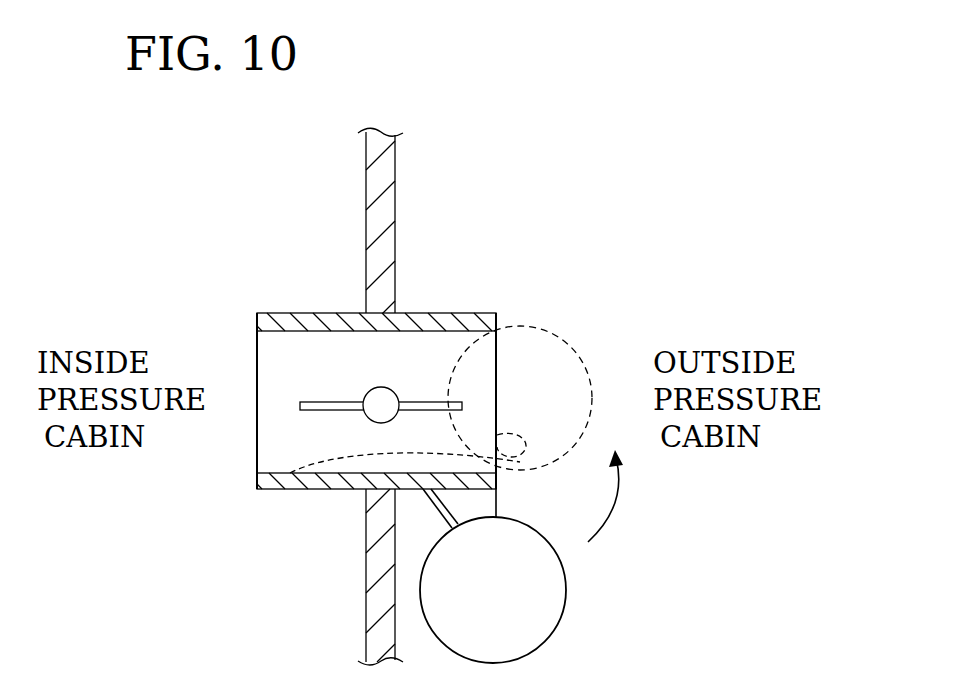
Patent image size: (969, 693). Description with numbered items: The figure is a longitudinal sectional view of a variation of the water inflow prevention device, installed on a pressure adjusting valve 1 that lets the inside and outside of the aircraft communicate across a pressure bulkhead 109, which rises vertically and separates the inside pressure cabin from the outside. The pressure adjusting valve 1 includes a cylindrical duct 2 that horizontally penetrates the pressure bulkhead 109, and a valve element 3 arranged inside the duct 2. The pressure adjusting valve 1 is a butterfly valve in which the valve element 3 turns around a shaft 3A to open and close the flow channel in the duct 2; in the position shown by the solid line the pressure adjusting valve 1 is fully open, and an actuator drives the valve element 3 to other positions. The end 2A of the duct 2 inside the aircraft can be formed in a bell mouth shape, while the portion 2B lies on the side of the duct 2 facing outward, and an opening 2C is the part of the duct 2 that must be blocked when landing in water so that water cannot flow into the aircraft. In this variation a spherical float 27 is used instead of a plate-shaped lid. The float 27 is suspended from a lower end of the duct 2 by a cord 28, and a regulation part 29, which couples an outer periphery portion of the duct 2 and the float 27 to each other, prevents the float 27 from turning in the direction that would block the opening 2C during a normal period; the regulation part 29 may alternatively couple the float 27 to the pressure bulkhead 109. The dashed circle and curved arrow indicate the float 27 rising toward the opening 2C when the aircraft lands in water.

The pressure adjusting valve 1 is at (233, 279).
The duct 2 is at (376, 400).
The end of the duct 2A is at (293, 313).
The upper wall right portion 2B is at (466, 313).
The opening of the duct 2C is at (288, 475).
The valve element 3 is at (332, 343).
The shaft 3A is at (375, 387).
The spherical float 27 is at (558, 340).
The cord 28 is at (497, 500).
The regulation part 29 is at (432, 510).
The pressure bulkhead 109 is at (396, 217).